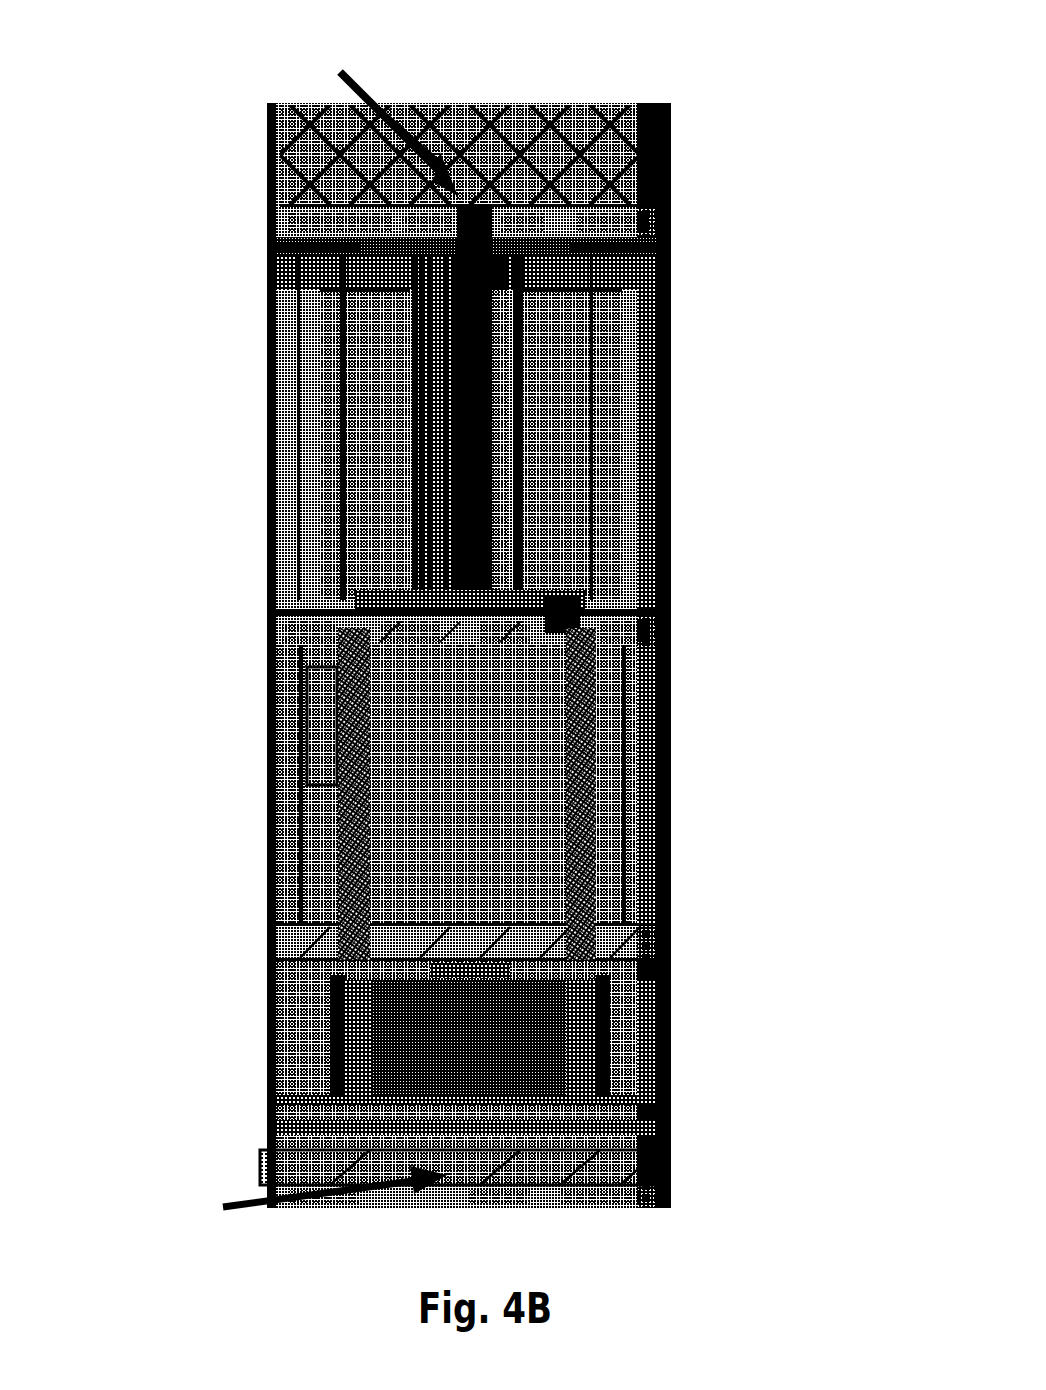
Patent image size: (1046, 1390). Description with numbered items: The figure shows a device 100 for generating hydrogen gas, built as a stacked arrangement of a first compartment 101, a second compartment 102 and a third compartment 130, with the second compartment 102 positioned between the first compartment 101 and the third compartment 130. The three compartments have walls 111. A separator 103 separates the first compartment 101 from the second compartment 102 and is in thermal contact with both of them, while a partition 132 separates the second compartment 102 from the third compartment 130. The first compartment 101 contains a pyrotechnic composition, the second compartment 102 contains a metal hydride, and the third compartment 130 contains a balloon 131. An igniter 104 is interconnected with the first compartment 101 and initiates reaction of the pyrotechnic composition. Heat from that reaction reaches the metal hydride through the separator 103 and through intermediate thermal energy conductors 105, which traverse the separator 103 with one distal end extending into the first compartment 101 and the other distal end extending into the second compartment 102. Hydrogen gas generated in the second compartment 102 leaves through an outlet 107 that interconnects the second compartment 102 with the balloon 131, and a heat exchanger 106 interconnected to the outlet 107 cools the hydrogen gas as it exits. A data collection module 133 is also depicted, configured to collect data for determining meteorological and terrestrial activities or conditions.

The device 100 is at (467, 92).
The first compartment 101 is at (503, 1030).
The second compartment 102 is at (450, 843).
The separator 103 is at (267, 617).
The igniter 104 is at (406, 1191).
The intermediate thermal energy conductors 105 is at (573, 755).
The heat exchanger 106 is at (753, 467).
The outlet 107 is at (570, 598).
The walls 111 is at (267, 343).
The third compartment 130 is at (673, 124).
The balloon 131 is at (575, 170).
The partition 132 is at (585, 235).
The data collection module 133 is at (550, 518).